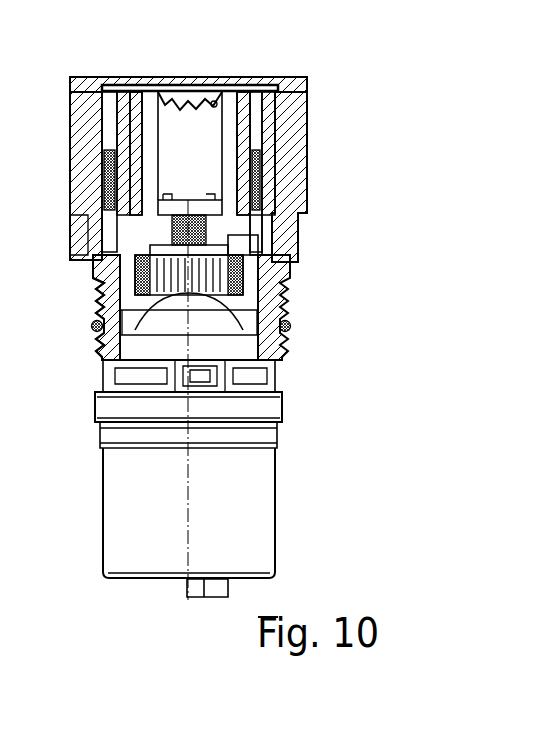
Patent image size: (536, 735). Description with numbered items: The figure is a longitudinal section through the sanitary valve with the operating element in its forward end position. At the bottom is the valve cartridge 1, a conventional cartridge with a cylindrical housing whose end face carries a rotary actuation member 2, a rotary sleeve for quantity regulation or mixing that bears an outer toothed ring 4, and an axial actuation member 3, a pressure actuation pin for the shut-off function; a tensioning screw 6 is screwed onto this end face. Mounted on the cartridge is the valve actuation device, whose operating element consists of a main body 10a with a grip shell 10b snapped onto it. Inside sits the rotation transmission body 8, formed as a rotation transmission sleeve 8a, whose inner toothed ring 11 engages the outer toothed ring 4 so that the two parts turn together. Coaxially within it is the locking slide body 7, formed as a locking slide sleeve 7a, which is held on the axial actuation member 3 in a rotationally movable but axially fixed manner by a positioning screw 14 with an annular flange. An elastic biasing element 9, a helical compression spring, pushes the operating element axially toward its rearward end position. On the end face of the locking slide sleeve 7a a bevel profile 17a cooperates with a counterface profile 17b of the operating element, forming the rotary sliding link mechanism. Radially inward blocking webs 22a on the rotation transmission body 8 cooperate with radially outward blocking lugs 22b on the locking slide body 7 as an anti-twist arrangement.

The valve cartridge 1 is at (273, 472).
The rotary actuation member 2 is at (95, 324).
The axial actuation member 3 is at (173, 231).
The outer toothed ring 4 is at (273, 333).
The tensioning screw 6 is at (273, 313).
The locking slide body 7 is at (272, 134).
The locking slide sleeve 7a is at (272, 134).
The rotation transmission body 8 is at (260, 268).
The rotation transmission sleeve 8a is at (260, 268).
The elastic biasing element 9 is at (275, 193).
The main body 10a is at (223, 78).
The grip shell 10b is at (296, 96).
The inner toothed ring 11 is at (133, 286).
The positioning screw 14 is at (273, 164).
The bevel profile 17a is at (178, 106).
The counterface profile 17b is at (186, 106).
The blocking web 22a is at (262, 224).
The blocking lug 22b is at (262, 241).